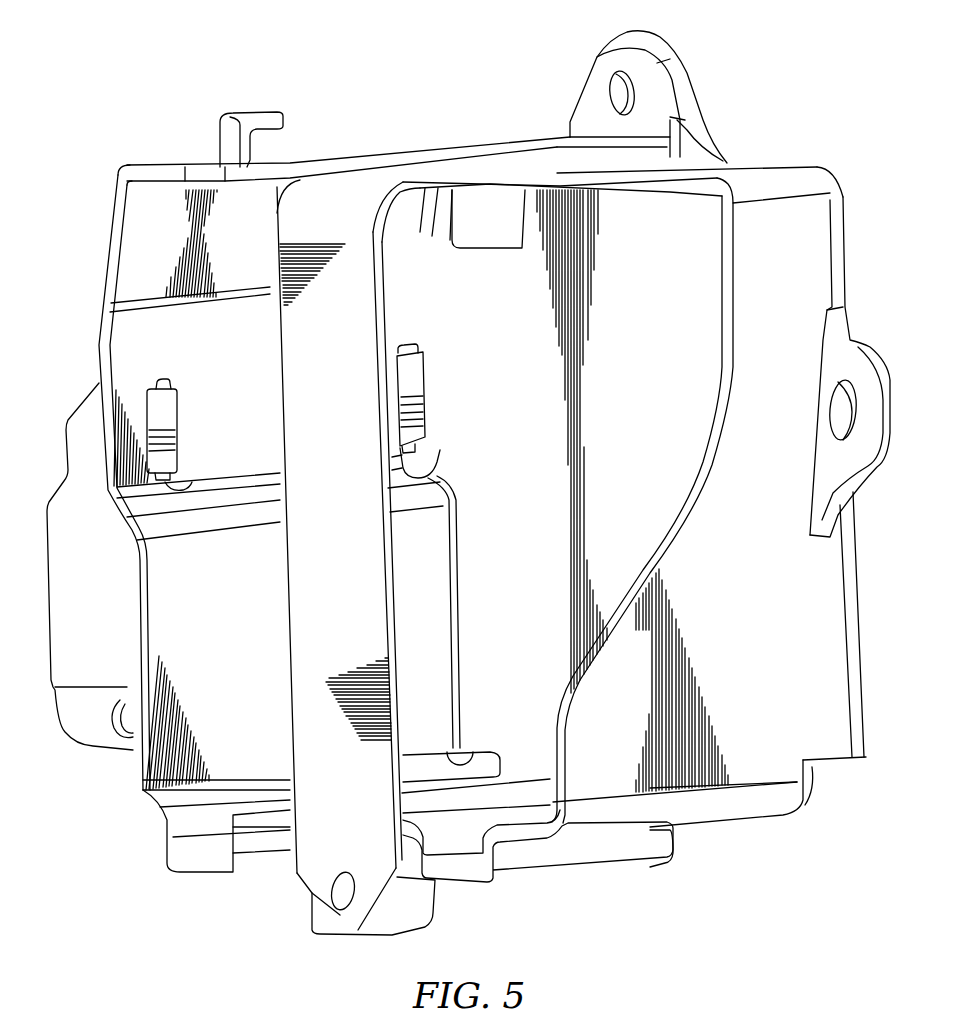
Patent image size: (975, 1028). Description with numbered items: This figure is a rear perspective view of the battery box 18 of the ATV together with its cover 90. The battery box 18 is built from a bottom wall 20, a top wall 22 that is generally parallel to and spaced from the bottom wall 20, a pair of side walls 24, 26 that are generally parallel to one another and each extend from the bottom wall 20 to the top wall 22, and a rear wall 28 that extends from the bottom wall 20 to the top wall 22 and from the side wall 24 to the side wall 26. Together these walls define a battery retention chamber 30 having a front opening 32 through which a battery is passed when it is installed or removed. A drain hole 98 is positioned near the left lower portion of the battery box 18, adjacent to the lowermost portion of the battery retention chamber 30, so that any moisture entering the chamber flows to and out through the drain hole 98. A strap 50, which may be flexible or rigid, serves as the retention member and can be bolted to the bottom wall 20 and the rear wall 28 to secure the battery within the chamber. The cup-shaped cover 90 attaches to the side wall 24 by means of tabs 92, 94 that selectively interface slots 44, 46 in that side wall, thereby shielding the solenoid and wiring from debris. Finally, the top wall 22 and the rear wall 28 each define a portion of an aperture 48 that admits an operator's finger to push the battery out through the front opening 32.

The battery box 18 is at (400, 65).
The bottom wall 20 is at (520, 788).
The top wall 22 is at (737, 173).
The side wall 24 is at (133, 250).
The side wall 26 is at (813, 235).
The rear wall 28 is at (686, 480).
The battery retention chamber 30 is at (164, 617).
The front opening 32 is at (105, 337).
The slot 44 is at (185, 487).
The slot 46 is at (438, 476).
The aperture 48 is at (525, 225).
The strap 50 is at (276, 616).
The cover 90 is at (55, 478).
The tab 92 is at (178, 415).
The tab 94 is at (425, 404).
The drain hole 98 is at (476, 758).